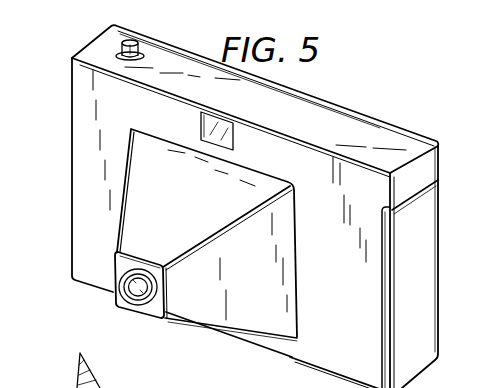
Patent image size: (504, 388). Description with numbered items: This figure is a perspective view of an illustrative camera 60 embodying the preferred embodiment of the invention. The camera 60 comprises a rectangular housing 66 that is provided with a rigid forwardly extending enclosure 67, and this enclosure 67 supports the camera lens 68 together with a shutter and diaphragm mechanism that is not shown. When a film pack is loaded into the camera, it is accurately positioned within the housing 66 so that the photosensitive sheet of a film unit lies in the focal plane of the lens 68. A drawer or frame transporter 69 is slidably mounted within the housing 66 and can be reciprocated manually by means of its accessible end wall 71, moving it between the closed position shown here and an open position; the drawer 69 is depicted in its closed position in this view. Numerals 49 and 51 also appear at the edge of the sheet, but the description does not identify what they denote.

The camera 60 is at (292, 108).
The rectangular housing 66 is at (84, 147).
The forwardly extending enclosure 67 is at (218, 299).
The camera lens 68 is at (128, 301).
The drawer 69 is at (381, 269).
The accessible end wall 71 is at (426, 260).
The element 49 is at (493, 20).
The element 51 is at (494, 70).